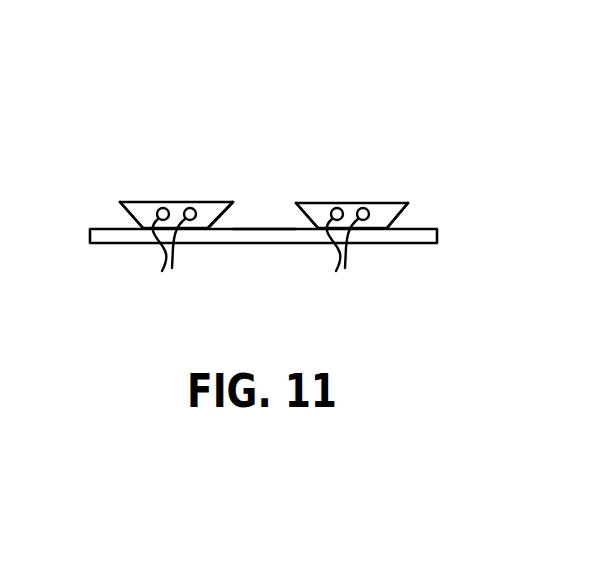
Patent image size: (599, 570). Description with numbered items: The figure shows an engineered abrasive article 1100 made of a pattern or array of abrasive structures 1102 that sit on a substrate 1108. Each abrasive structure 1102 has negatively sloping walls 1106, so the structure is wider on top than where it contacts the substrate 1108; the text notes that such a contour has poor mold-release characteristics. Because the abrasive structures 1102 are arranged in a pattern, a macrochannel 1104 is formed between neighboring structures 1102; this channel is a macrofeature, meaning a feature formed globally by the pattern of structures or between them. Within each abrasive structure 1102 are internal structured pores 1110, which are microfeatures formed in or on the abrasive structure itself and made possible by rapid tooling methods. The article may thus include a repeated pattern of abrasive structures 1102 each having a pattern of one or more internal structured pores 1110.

The engineered abrasive article 1100 is at (171, 57).
The abrasive structure 1102 is at (148, 201).
The macrochannel 1104 is at (265, 228).
The negatively sloping wall 1106 is at (442, 180).
The substrate 1108 is at (283, 244).
The internal structured pore 1110 is at (253, 252).